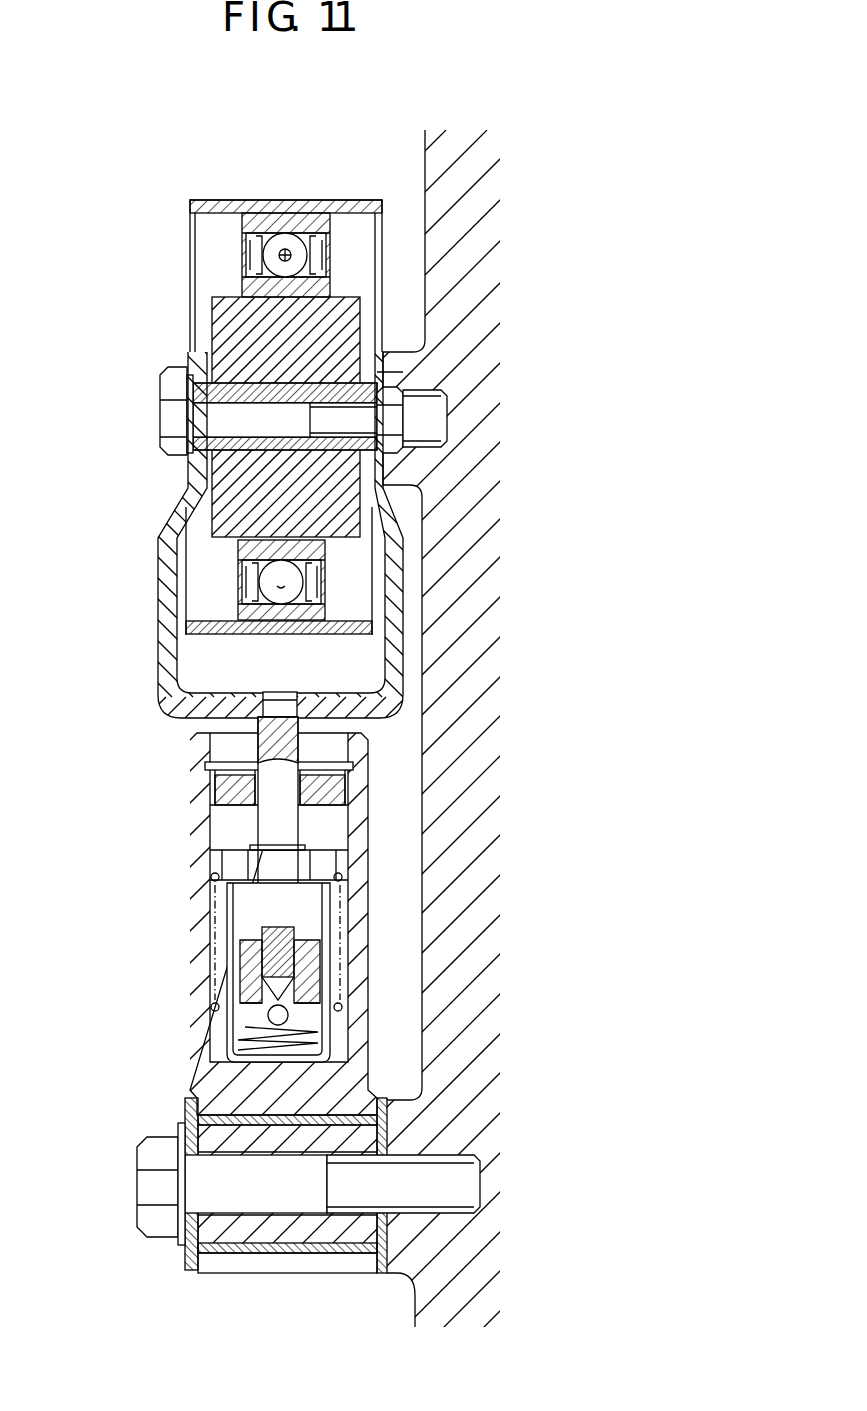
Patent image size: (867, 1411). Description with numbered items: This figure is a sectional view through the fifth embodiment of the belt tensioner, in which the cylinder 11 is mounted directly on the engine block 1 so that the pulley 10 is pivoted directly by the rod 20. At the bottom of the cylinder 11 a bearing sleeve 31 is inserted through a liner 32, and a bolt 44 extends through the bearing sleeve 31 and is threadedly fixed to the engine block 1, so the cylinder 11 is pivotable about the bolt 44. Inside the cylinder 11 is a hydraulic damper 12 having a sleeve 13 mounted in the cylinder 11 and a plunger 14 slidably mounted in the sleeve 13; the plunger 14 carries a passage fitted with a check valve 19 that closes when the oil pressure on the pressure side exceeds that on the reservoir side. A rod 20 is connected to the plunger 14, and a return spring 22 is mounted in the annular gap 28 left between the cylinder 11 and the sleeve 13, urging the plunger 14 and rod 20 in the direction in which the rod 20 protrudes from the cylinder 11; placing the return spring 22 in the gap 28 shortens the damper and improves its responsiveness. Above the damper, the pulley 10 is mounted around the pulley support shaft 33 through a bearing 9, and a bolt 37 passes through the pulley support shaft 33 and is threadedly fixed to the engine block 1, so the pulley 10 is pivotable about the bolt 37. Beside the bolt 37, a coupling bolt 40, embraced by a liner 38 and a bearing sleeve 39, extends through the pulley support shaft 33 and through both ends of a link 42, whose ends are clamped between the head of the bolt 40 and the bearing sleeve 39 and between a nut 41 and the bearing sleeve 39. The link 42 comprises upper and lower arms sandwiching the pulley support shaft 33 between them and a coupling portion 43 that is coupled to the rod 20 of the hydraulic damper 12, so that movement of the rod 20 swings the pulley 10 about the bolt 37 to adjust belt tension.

The engine block 1 is at (432, 176).
The bearing 9 is at (268, 225).
The pulley 10 is at (218, 205).
The cylinder 11 is at (200, 912).
The hydraulic damper 12 is at (204, 880).
The sleeve 13 is at (332, 925).
The plunger 14 is at (332, 988).
The check valve 19 is at (310, 1053).
The rod 20 is at (273, 823).
The return spring 22 is at (327, 862).
The annular gap 28 is at (207, 985).
The bearing sleeve 31 is at (215, 1138).
The liner 32 is at (272, 1250).
The pulley support shaft 33 is at (227, 325).
The bolt 37 is at (440, 400).
The liner 38 is at (207, 468).
The bearing sleeve 39 is at (217, 445).
The coupling bolt 40 is at (173, 412).
The nut 41 is at (390, 422).
The link 42 is at (168, 588).
The coupling portion 43 is at (350, 706).
The bolt 44 is at (152, 1187).